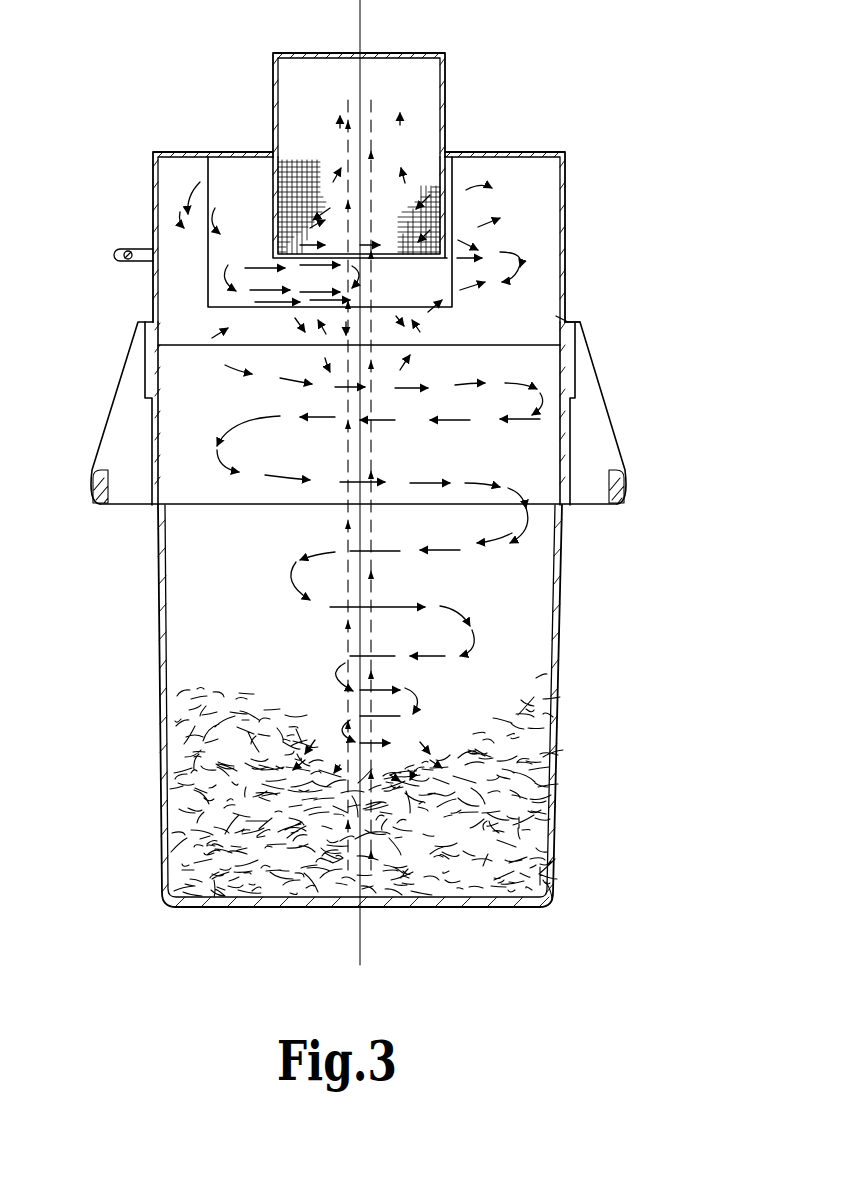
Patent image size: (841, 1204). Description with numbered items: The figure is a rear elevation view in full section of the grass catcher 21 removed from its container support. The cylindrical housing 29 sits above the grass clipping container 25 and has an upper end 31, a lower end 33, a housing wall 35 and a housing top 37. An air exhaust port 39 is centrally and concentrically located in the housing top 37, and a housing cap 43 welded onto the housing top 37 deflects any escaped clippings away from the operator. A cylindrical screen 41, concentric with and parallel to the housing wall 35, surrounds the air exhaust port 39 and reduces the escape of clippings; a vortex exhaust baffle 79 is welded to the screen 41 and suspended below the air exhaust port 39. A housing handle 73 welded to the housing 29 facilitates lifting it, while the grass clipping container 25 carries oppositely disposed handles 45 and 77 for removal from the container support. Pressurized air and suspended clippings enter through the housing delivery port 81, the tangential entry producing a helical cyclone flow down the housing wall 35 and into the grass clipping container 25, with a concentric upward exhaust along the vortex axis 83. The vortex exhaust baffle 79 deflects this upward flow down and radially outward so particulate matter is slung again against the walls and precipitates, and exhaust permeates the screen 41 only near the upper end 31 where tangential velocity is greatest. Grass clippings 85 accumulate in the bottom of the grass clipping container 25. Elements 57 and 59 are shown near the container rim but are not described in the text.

The grass catcher 21 is at (192, 110).
The grass clipping container 25 is at (164, 643).
The housing 29 is at (583, 257).
The upper end 31 is at (143, 189).
The lower end 33 is at (143, 305).
The housing wall 35 is at (560, 240).
The housing top 37 is at (526, 143).
The air exhaust port 39 is at (361, 102).
The screen 41 is at (309, 210).
The housing cap 43 is at (434, 53).
The handle 45 is at (612, 430).
The flange 57 is at (560, 320).
The seal 59 is at (575, 322).
The housing handle 73 is at (123, 263).
The handle 77 is at (105, 431).
The vortex exhaust baffle 79 is at (376, 261).
The housing delivery port 81 is at (246, 223).
The vortex axis 83 is at (360, 14).
The grass clippings 85 is at (280, 866).